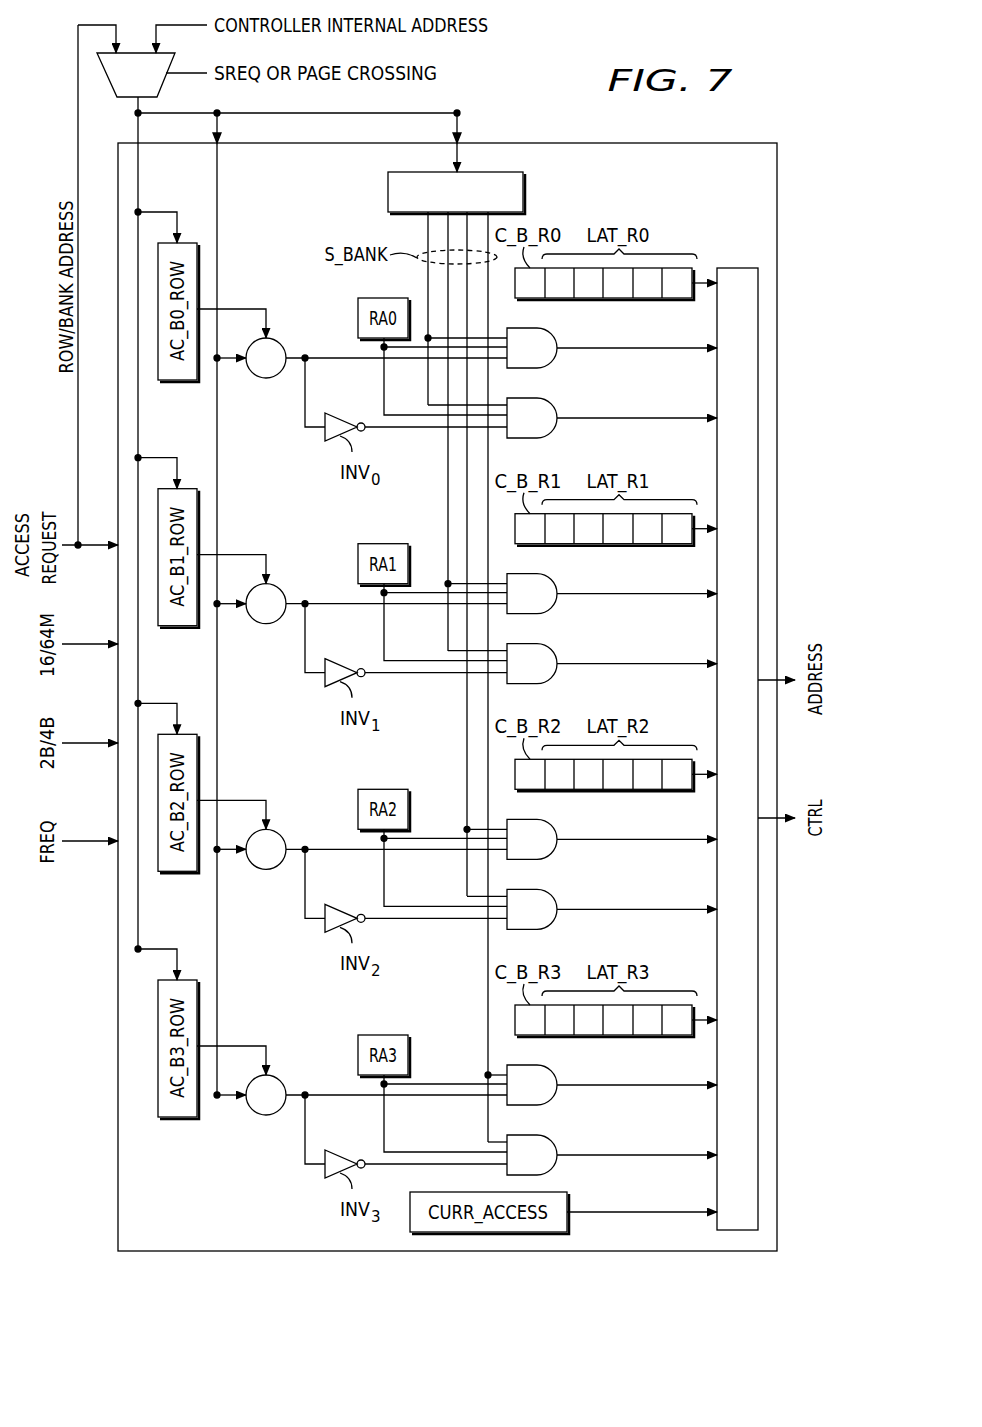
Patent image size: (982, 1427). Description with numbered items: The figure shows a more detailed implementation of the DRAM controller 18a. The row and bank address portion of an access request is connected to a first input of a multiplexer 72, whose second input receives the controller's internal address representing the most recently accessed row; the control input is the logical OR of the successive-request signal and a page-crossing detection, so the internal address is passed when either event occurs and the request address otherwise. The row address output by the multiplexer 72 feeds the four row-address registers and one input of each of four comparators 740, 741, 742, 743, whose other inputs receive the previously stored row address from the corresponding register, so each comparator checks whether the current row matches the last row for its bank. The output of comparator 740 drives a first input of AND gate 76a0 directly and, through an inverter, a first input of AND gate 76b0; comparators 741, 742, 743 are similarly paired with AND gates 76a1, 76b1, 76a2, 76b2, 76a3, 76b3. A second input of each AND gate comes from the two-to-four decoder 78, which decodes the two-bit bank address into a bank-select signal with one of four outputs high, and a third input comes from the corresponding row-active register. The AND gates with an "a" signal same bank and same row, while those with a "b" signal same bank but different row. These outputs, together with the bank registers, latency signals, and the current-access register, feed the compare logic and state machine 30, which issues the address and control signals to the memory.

The multiplexer 72 is at (138, 53).
The DRAM controller 18a is at (514, 125).
The 2-to-4 decoder 78 is at (388, 191).
The compare logic and state machine 30 is at (745, 268).
The comparator 740 is at (265, 378).
The comparator 741 is at (264, 633).
The comparator 742 is at (264, 878).
The comparator 743 is at (264, 1124).
The AND gate 76a0 is at (557, 354).
The AND gate 76b0 is at (557, 424).
The AND gate 76a1 is at (612, 601).
The AND gate 76b1 is at (612, 669).
The AND gate 76a2 is at (612, 846).
The AND gate 76b2 is at (612, 914).
The AND gate 76a3 is at (612, 1092).
The AND gate 76b3 is at (612, 1160).